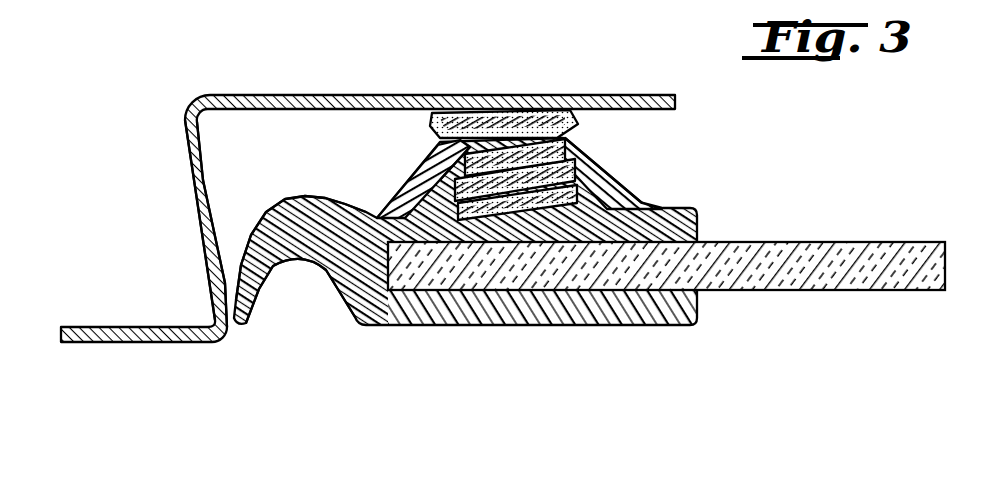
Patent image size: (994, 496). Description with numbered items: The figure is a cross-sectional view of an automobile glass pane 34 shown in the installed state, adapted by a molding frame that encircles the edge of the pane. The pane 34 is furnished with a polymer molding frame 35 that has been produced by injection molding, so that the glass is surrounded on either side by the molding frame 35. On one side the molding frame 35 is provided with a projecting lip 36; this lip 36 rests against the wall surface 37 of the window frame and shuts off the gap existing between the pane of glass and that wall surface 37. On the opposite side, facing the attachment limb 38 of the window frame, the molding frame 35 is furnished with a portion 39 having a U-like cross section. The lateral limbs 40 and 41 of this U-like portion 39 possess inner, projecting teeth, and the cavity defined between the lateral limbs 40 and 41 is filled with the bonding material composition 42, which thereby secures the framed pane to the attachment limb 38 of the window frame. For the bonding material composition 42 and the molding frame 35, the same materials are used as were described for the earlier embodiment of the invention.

The pane 34 is at (836, 242).
The molding frame 35 is at (393, 332).
The projecting lip 36 is at (293, 246).
The wall surface 37 is at (225, 263).
The attachment limb 38 is at (368, 95).
The portion having a U-like cross section 39 is at (590, 146).
The lateral limb 40 is at (433, 166).
The lateral limb 41 is at (583, 170).
The bonding material composition 42 is at (513, 133).